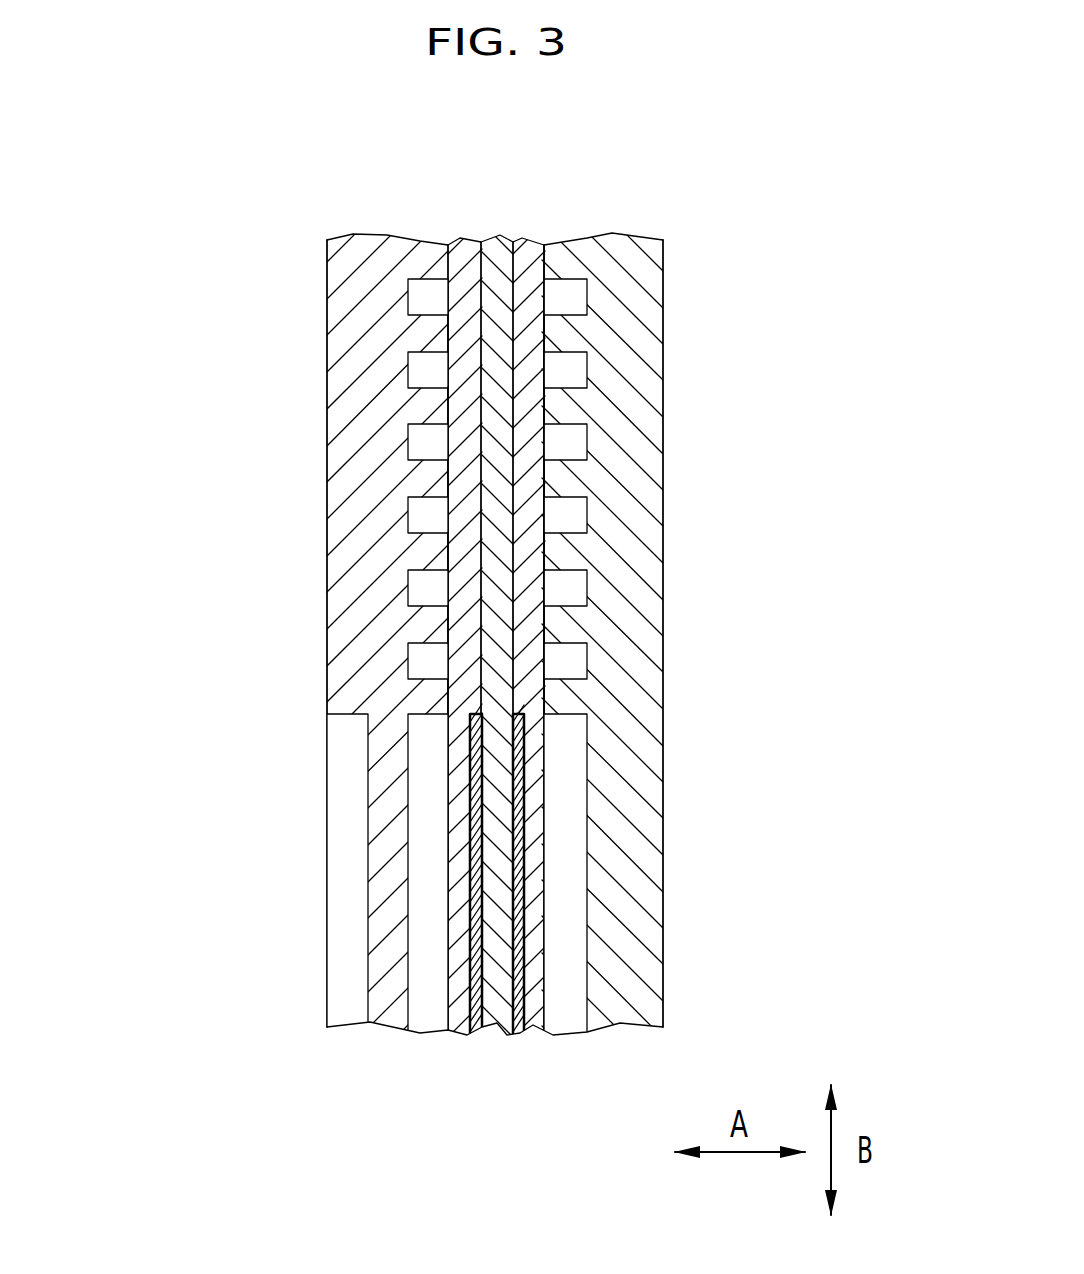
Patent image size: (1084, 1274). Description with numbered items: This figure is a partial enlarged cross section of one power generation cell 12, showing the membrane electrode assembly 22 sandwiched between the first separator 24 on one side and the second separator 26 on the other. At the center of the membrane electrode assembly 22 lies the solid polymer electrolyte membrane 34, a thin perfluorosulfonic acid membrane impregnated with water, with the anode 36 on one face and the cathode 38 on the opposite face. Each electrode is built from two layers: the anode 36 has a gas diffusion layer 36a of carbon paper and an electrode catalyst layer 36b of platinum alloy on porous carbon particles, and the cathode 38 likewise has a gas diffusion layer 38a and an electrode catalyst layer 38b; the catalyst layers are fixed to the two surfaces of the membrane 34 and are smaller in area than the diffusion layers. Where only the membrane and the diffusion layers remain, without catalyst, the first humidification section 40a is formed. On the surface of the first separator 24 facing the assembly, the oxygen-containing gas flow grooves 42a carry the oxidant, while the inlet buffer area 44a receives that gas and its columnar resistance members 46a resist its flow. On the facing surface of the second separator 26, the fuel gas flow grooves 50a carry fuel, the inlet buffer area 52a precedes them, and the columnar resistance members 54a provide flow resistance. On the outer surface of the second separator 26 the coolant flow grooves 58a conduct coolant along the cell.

The power generation cell 12 is at (717, 124).
The membrane electrode assembly 22 is at (590, 1127).
The first separator 24 is at (602, 232).
The second separator 26 is at (392, 235).
The solid polymer electrolyte membrane 34 is at (500, 1000).
The anode 36 is at (462, 1042).
The gas diffusion layer 36a is at (477, 937).
The electrode catalyst layer 36b is at (453, 892).
The cathode 38 is at (535, 1042).
The gas diffusion layer 38a is at (537, 938).
The electrode catalyst layer 38b is at (527, 893).
The first humidification section 40a is at (533, 460).
The oxygen-containing gas flow grooves 42a is at (567, 792).
The inlet buffer area 44a is at (573, 518).
The columnar resistance members 46a is at (562, 407).
The fuel gas flow grooves 50a is at (420, 750).
The inlet buffer area 52a is at (422, 446).
The columnar resistance members 54a is at (430, 407).
The coolant flow grooves 58a is at (348, 827).